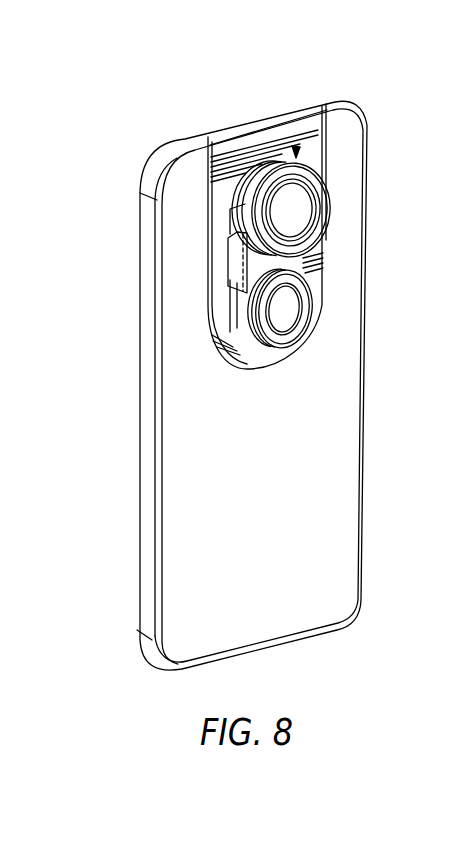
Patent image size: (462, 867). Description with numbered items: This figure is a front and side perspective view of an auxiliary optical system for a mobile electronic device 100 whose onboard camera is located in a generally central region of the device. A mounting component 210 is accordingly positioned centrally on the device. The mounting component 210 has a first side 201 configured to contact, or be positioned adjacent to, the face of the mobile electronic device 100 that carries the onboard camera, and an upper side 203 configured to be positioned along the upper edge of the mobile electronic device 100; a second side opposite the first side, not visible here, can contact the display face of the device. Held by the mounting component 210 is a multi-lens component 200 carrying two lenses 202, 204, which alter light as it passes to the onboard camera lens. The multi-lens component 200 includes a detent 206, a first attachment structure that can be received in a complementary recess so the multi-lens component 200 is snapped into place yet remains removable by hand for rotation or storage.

The mobile electronic device 100 is at (183, 432).
The multi-lens component 200 is at (261, 214).
The first side 201 is at (220, 186).
The lens 202 is at (287, 311).
The upper side 203 is at (257, 122).
The lens 204 is at (300, 210).
The detent 206 is at (232, 271).
The mounting component 210 is at (296, 148).